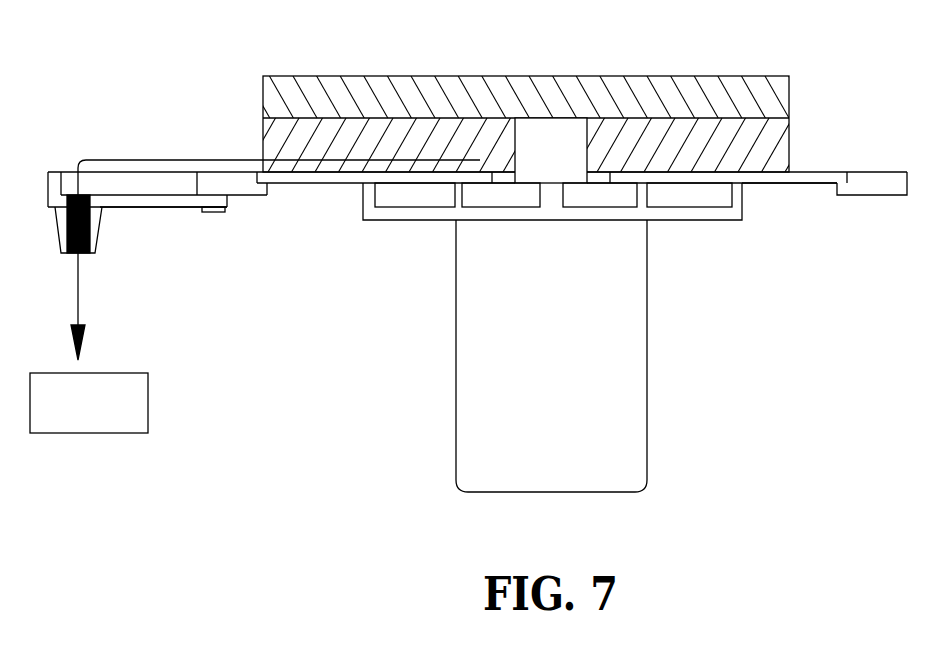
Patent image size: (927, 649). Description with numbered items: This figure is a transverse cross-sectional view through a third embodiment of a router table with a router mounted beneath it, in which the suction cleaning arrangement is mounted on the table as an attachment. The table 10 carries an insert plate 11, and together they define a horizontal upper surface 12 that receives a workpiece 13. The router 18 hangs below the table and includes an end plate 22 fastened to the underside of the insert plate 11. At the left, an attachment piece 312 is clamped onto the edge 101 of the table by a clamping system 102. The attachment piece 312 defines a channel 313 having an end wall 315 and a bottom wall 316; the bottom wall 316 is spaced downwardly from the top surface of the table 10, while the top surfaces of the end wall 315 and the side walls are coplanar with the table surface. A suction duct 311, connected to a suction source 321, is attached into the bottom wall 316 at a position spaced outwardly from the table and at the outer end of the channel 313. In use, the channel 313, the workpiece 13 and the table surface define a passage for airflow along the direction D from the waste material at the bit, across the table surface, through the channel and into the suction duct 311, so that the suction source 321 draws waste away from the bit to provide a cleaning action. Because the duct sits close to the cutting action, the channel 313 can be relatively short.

The table 10 is at (883, 185).
The insert plate 11 is at (777, 183).
The upper surface 12 is at (802, 172).
The workpiece 13 is at (610, 93).
The router 18 is at (622, 397).
The end plate 22 is at (732, 208).
The edge of the table 101 is at (220, 183).
The clamping system 102 is at (220, 213).
The direction of airflow D is at (233, 160).
The suction duct 311 is at (95, 225).
The attachment piece 312 is at (162, 202).
The channel 313 is at (126, 184).
The end wall 315 is at (53, 190).
The bottom wall 316 is at (112, 193).
The suction source 321 is at (135, 420).